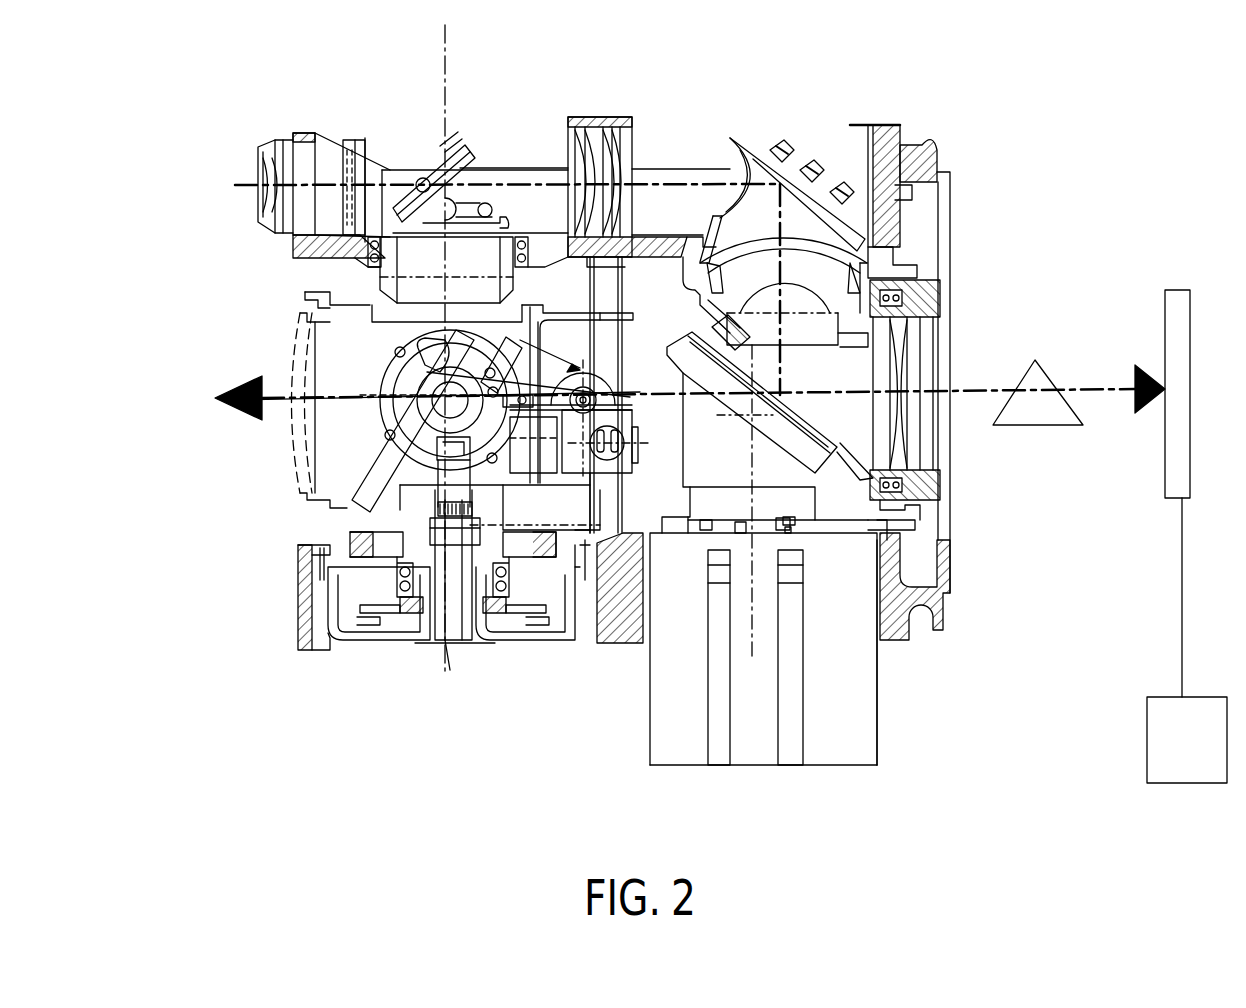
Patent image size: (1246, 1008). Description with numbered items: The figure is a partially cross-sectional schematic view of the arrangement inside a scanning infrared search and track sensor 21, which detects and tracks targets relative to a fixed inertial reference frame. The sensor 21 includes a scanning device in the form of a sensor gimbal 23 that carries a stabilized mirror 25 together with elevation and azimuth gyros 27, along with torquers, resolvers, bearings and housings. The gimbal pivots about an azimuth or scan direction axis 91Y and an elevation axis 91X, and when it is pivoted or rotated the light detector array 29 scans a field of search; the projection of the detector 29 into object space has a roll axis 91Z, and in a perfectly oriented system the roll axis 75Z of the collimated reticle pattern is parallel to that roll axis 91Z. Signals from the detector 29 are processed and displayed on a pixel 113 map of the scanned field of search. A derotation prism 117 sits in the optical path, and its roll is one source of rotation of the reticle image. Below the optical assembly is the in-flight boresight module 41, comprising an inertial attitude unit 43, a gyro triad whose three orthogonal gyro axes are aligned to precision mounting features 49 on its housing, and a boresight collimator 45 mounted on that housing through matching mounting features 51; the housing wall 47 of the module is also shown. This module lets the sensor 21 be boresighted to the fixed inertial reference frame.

The scanning infrared search and track (IRST) sensor 21 is at (676, 130).
The azimuth or scan direction axis 91Y is at (446, 46).
The elevation axis 91X is at (443, 403).
The roll axis of the collimated reticle pattern 75Z is at (345, 388).
The roll axis 91Z is at (690, 422).
The stabilized mirror 25 is at (400, 430).
The elevation and azimuth gyros 27 is at (530, 456).
The sensor gimbal 23 is at (425, 665).
The boresight collimator (BSC) 45 is at (712, 458).
The inertial attitude unit (IAU) 43 is at (672, 692).
The in-flight boresight module (BSM) 41 is at (770, 778).
The housing wall 47 is at (850, 716).
The precision mounting features 49 is at (790, 522).
The matching mounting features 51 is at (792, 538).
The derotation prism 117 is at (1040, 358).
The light detector array 29 is at (1163, 490).
The pixel map 113 is at (1147, 730).